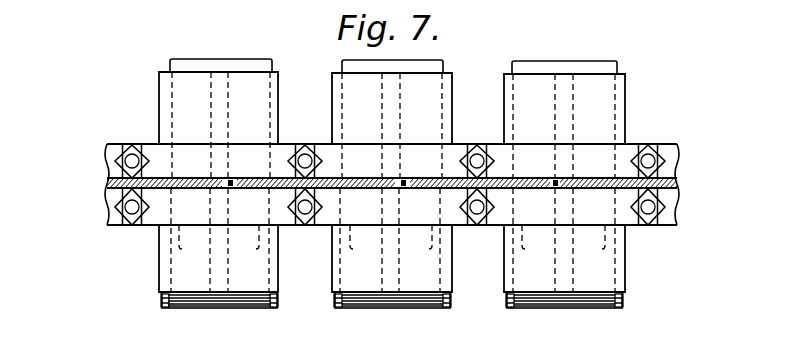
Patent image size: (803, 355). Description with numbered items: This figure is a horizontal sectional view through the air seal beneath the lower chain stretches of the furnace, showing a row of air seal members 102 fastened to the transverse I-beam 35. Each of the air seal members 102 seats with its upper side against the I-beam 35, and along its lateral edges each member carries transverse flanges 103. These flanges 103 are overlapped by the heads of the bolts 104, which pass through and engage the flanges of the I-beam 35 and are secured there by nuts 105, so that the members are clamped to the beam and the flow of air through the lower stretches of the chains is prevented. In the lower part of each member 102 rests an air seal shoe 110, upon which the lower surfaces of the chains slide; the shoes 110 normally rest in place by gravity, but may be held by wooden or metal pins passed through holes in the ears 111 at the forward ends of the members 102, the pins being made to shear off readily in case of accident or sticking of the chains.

The transverse I-beam 35 is at (107, 186).
The air seal member 102 is at (158, 270).
The transverse flange 103 is at (637, 146).
The bolt 104 is at (323, 162).
The nut 105 is at (323, 207).
The air seal shoe 110 is at (342, 77).
The ear 111 is at (160, 308).